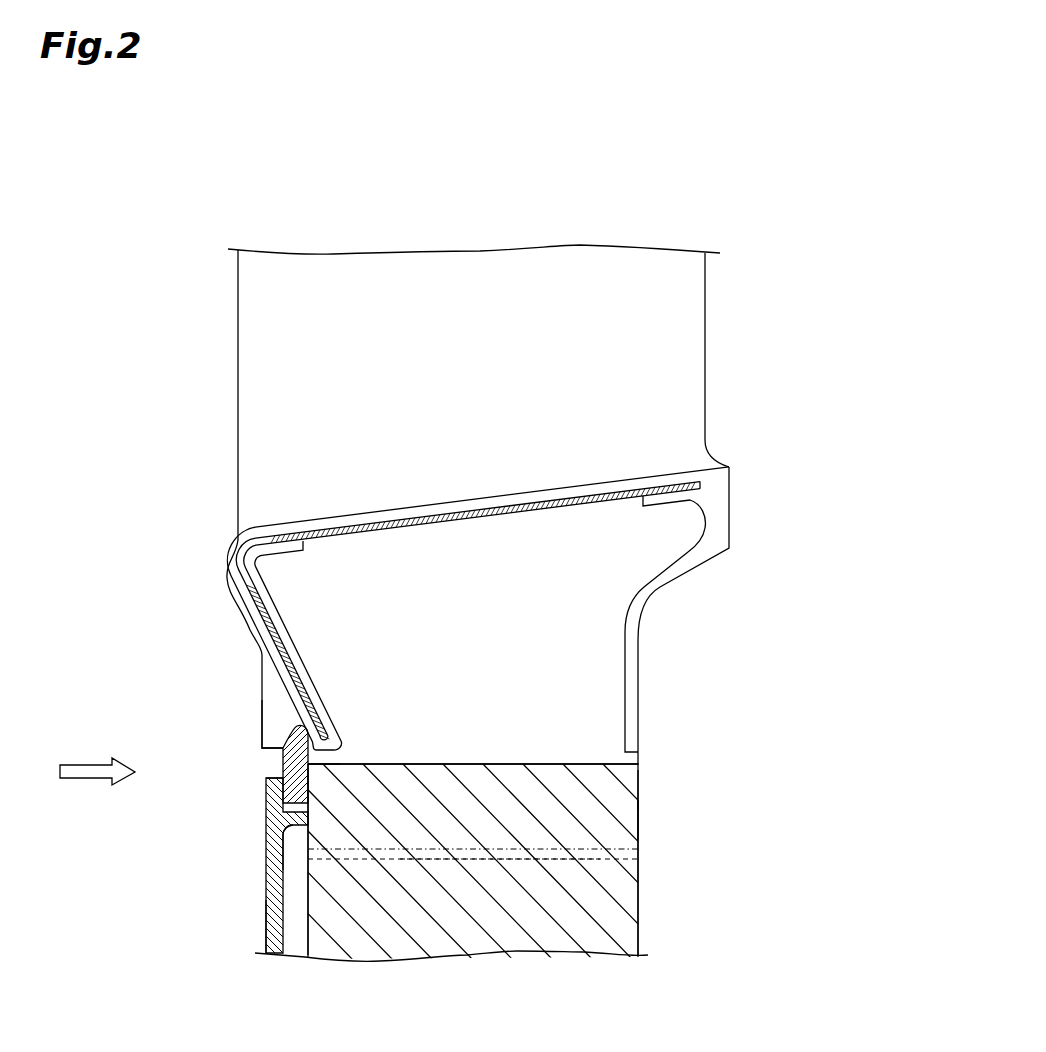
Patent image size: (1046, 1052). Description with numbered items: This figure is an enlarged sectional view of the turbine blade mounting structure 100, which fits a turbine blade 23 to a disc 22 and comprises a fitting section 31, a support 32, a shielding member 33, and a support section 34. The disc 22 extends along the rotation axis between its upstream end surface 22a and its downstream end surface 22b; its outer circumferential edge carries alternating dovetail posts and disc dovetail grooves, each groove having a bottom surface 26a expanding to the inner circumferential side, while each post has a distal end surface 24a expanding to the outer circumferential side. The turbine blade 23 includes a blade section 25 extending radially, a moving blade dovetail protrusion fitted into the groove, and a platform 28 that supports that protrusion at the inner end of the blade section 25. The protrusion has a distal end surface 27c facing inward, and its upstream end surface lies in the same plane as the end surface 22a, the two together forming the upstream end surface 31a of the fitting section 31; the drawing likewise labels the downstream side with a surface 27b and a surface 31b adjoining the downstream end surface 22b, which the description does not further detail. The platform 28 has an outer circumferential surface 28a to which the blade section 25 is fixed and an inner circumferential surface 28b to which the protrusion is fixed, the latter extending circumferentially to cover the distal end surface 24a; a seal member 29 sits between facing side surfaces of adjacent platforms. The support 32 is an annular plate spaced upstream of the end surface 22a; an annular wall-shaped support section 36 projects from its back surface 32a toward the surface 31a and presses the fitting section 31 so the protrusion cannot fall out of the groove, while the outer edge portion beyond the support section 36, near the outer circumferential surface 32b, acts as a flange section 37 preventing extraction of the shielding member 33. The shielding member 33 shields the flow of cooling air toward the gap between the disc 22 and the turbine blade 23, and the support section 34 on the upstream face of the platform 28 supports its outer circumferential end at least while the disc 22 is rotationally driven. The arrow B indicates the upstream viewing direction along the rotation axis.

The turbine blade mounting structure 100 is at (792, 512).
The disc 22 is at (638, 903).
The upstream end surface of the disc 22a is at (293, 962).
The downstream end surface of the disc 22b is at (640, 930).
The turbine blade 23 is at (214, 398).
The distal end surface of the protrusion 24a is at (533, 763).
The blade section 25 is at (673, 300).
The bottom surface of the groove 26a is at (548, 850).
The inner panel outer surface 27b is at (641, 757).
The distal end surface of the protrusion 27c is at (435, 865).
The platform 28 is at (213, 585).
The outer circumferential surface of the platform 28a is at (385, 508).
The inner circumferential surface of the platform 28b is at (340, 758).
The seal member 29 is at (290, 672).
The fitting section 31 is at (660, 792).
The end surface on the upstream side of the fitting section 31a is at (265, 845).
The outer side face 31b is at (638, 817).
The support 32 is at (265, 877).
The back surface of the support 32a is at (265, 920).
The outer circumferential surface of the support 32b is at (268, 776).
The shielding member 33 is at (283, 760).
The support section 34 is at (245, 738).
The support section 36 is at (267, 837).
The flange section 37 is at (308, 778).
The viewing direction B is at (83, 760).